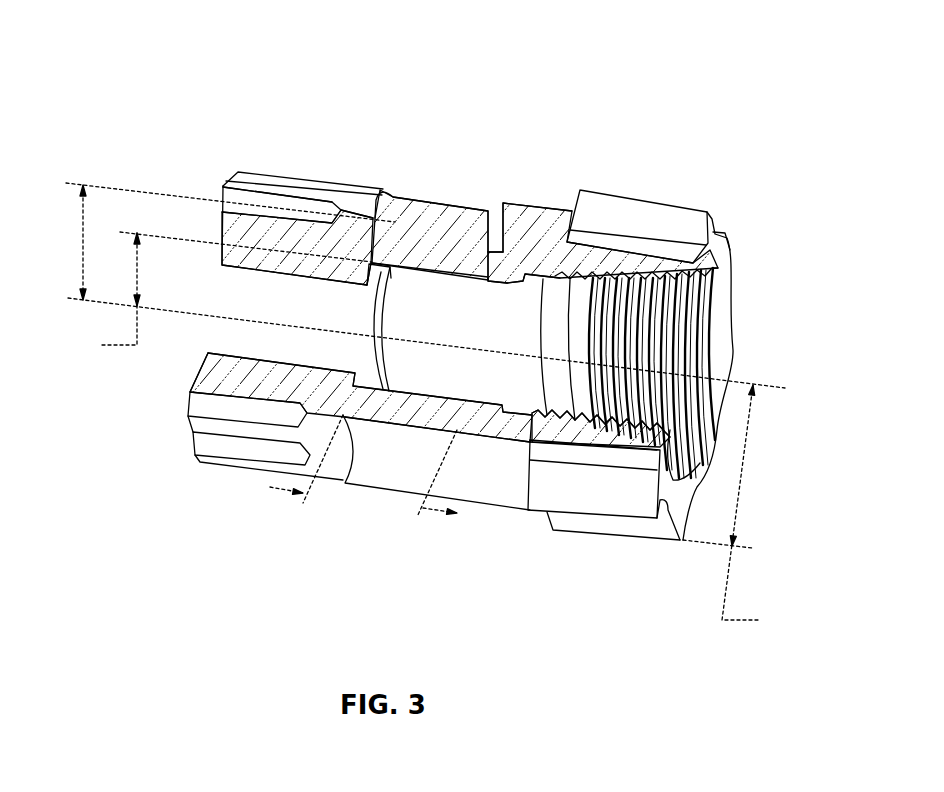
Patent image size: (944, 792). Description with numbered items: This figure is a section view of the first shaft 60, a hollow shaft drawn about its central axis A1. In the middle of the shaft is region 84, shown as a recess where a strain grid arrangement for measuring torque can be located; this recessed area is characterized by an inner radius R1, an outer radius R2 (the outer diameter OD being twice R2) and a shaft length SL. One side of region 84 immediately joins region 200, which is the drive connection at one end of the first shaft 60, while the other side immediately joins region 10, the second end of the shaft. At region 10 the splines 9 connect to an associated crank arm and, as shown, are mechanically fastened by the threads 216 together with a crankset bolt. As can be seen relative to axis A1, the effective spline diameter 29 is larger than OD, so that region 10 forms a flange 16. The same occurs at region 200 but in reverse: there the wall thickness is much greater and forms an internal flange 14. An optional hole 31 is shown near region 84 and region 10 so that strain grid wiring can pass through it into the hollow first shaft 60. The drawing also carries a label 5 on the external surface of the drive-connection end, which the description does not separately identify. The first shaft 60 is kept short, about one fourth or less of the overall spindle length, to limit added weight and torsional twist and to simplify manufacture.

The first shaft 60 is at (472, 113).
The rib / key 5 is at (297, 209).
The internal flange 14 is at (247, 243).
The region 84 is at (440, 198).
The hole 31 is at (498, 230).
The splines 9 is at (662, 196).
The threads 216 is at (711, 274).
The region 200 is at (253, 483).
The flange 16 is at (577, 433).
The region 10 is at (516, 534).
The effective spline diameter 29 is at (739, 512).
The axis A1 is at (448, 351).
The inner radius R1 is at (215, 296).
The outer radius R2 is at (230, 241).
The shaft length SL is at (363, 466).